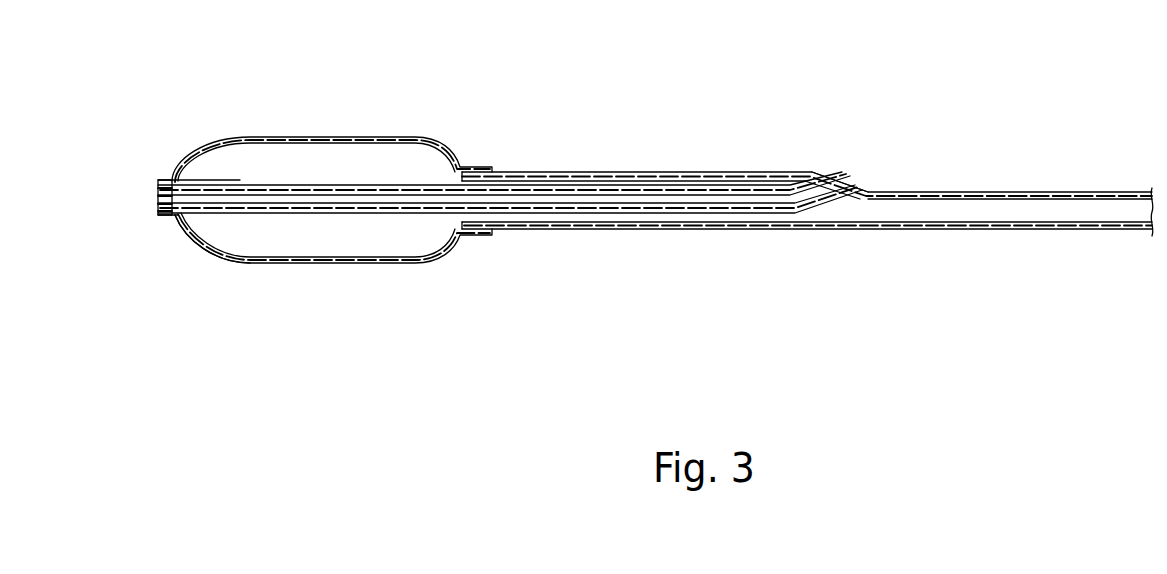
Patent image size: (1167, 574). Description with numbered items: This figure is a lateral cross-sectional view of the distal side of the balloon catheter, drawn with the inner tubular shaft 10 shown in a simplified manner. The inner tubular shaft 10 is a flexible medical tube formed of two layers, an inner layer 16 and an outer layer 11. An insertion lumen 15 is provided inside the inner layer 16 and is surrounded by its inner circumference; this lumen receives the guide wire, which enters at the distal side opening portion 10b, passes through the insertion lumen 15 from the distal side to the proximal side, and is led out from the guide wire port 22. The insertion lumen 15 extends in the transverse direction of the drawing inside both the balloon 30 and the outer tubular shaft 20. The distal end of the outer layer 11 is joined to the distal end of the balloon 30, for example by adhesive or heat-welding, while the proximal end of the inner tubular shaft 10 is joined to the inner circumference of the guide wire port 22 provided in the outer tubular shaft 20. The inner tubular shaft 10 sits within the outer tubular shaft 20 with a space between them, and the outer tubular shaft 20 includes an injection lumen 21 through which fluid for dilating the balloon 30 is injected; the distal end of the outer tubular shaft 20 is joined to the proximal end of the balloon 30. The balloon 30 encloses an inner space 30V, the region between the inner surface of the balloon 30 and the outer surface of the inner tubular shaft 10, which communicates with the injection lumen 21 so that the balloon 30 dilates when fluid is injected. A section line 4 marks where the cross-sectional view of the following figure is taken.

The inner tubular shaft 10 is at (222, 300).
The distal side opening portion 10b is at (157, 200).
The outer layer 11 is at (207, 213).
The insertion lumen 15 is at (612, 203).
The inner layer 16 is at (172, 215).
The outer tubular shaft 20 is at (829, 230).
The injection lumen 21 is at (707, 218).
The guide wire port 22 is at (850, 178).
The balloon 30 is at (387, 137).
The inner space 30V is at (344, 137).
The section line 4- 4 is at (296, 124).